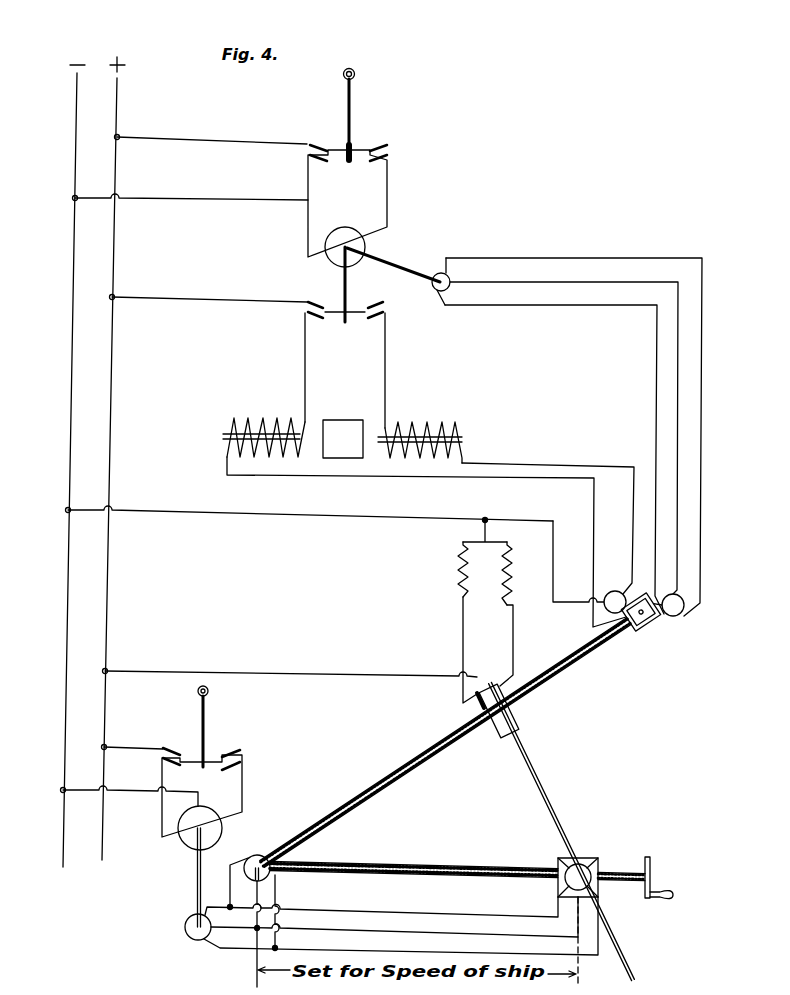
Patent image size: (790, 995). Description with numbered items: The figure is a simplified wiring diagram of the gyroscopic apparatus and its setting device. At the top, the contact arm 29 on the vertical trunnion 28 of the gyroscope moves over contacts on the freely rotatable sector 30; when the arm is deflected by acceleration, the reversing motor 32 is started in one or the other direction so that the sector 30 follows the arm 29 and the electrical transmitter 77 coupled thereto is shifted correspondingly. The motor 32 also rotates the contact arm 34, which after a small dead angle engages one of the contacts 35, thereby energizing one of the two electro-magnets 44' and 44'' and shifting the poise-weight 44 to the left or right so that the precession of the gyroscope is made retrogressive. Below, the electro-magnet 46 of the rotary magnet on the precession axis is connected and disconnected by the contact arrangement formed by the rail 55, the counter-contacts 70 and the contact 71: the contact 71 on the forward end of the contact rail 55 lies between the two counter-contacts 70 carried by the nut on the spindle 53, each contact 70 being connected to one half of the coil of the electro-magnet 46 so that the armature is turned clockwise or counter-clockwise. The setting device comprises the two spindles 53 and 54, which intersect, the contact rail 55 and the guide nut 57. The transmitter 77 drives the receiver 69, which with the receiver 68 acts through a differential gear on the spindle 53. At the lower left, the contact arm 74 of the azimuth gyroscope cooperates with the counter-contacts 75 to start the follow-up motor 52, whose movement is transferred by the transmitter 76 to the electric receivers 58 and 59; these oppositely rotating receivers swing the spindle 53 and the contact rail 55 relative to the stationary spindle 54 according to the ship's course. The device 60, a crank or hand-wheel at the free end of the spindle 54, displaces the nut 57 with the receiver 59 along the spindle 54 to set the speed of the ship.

The vertical trunnion 28 is at (356, 75).
The contact arm 29 is at (352, 118).
The freely rotatable sector 30 is at (356, 168).
The reversing motor 32 is at (353, 235).
The contact arm 34 is at (348, 290).
The contacts 35 is at (366, 314).
The electro-magnet 44' is at (264, 424).
The poise-weight 44 is at (343, 426).
The electro-magnet 44'' is at (420, 427).
The electro-magnet 46 is at (512, 579).
The reversing motor 52 is at (186, 836).
The spindle 53 is at (396, 774).
The spindle 54 is at (441, 861).
The contact rail 55 is at (502, 688).
The guide nut 57 is at (557, 862).
The electric receiver 58 is at (258, 856).
The receiver 59 is at (586, 865).
The device 60 is at (652, 860).
The receiver 68 is at (612, 593).
The receiver 69 is at (675, 616).
The counter-contacts 70 is at (494, 681).
The contact 71 is at (476, 695).
The contact arm 74 is at (207, 718).
The counter-contacts 75 is at (243, 766).
The transmitter 76 is at (197, 938).
The electrical transmitter 77 is at (438, 273).